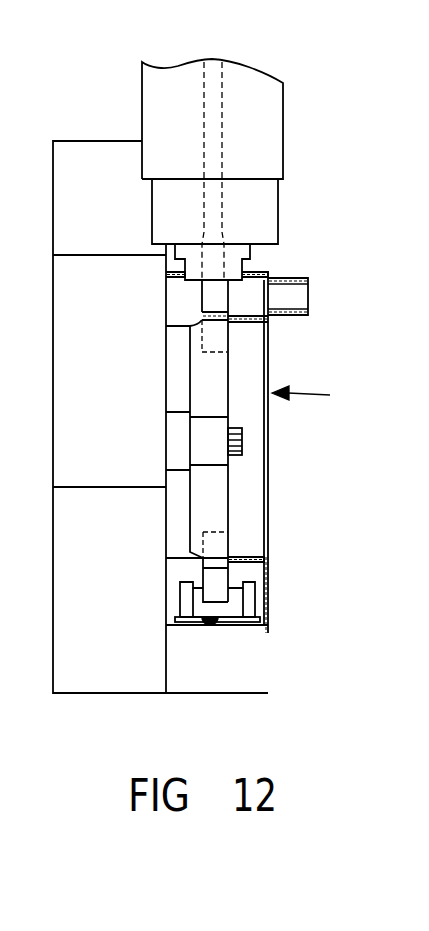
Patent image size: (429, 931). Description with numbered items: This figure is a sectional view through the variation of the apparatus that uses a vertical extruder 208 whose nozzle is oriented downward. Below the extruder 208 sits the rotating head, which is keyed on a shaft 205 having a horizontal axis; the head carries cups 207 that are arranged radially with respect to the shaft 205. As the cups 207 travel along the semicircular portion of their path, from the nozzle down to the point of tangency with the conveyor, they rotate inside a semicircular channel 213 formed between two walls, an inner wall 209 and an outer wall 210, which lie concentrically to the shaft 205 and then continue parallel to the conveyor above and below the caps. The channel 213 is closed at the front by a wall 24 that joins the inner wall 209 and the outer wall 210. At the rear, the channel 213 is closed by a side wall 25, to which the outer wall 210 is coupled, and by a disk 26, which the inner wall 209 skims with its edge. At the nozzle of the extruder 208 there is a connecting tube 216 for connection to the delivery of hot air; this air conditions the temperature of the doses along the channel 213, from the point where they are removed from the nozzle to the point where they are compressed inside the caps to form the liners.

The vertical extruder 208 is at (265, 112).
The outer wall 210 is at (262, 272).
The connecting tube 216 is at (295, 315).
The inner wall 209 is at (248, 323).
The semicircular channel 213 is at (330, 395).
The shaft 205 is at (242, 443).
The disk 26 is at (232, 498).
The cups 207 is at (218, 575).
The wall 24 is at (270, 593).
The side wall 25 is at (170, 657).